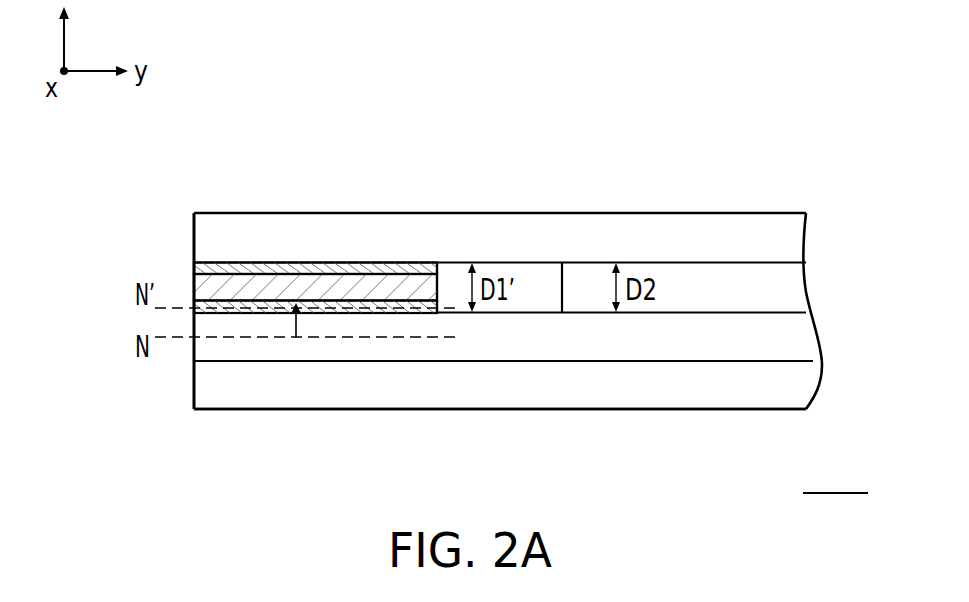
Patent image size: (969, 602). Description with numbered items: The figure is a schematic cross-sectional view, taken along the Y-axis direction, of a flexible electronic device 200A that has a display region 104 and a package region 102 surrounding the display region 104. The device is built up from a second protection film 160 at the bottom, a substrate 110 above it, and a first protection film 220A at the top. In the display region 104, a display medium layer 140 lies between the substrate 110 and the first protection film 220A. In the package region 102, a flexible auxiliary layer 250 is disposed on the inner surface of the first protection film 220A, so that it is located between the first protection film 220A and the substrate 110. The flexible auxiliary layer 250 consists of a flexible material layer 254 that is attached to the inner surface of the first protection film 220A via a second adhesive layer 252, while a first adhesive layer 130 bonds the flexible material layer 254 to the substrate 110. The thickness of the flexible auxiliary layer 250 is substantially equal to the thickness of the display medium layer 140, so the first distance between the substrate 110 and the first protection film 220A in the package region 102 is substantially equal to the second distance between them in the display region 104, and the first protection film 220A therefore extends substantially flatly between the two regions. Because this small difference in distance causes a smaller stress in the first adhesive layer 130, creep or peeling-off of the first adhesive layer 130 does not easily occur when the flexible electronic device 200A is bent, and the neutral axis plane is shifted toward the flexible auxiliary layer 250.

The package region 102 is at (437, 156).
The display region 104 is at (805, 156).
The substrate 110 is at (786, 344).
The first adhesive layer 130 is at (224, 313).
The display medium layer 140 is at (778, 289).
The second protection film 160 is at (783, 394).
The flexible electronic device 200A is at (835, 474).
The first protection film 220A is at (778, 236).
The flexible auxiliary layer 250 is at (242, 251).
The second adhesive layer 252 is at (210, 268).
The flexible material layer 254 is at (210, 283).